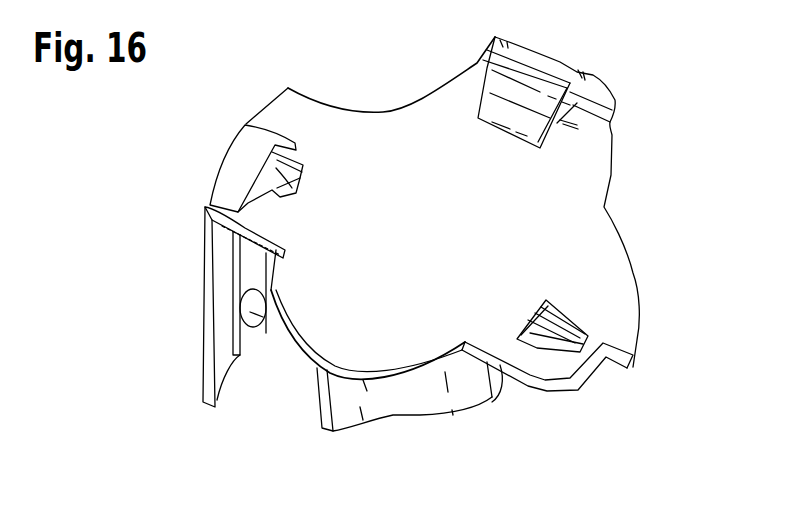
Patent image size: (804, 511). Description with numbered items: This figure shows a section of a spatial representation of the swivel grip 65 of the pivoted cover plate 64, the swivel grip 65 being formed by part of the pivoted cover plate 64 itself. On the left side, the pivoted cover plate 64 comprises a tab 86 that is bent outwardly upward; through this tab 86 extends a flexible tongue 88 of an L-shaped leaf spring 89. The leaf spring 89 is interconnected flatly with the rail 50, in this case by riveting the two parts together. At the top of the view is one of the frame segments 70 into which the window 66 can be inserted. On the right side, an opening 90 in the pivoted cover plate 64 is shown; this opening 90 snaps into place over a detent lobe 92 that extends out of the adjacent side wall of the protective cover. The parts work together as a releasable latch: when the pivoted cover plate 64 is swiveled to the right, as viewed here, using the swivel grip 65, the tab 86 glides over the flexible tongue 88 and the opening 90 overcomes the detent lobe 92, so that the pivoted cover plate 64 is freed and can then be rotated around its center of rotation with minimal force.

The rail 50 is at (205, 330).
The pivoted cover plate 64 is at (567, 250).
The swivel grip 65 is at (367, 336).
The window 66 is at (593, 84).
The frame segment 70 is at (505, 85).
The tab 86 is at (245, 148).
The flexible tongue 88 is at (278, 167).
The L-shaped leaf spring 89 is at (247, 263).
The opening 90 is at (566, 317).
The detent lobe 92 is at (538, 330).